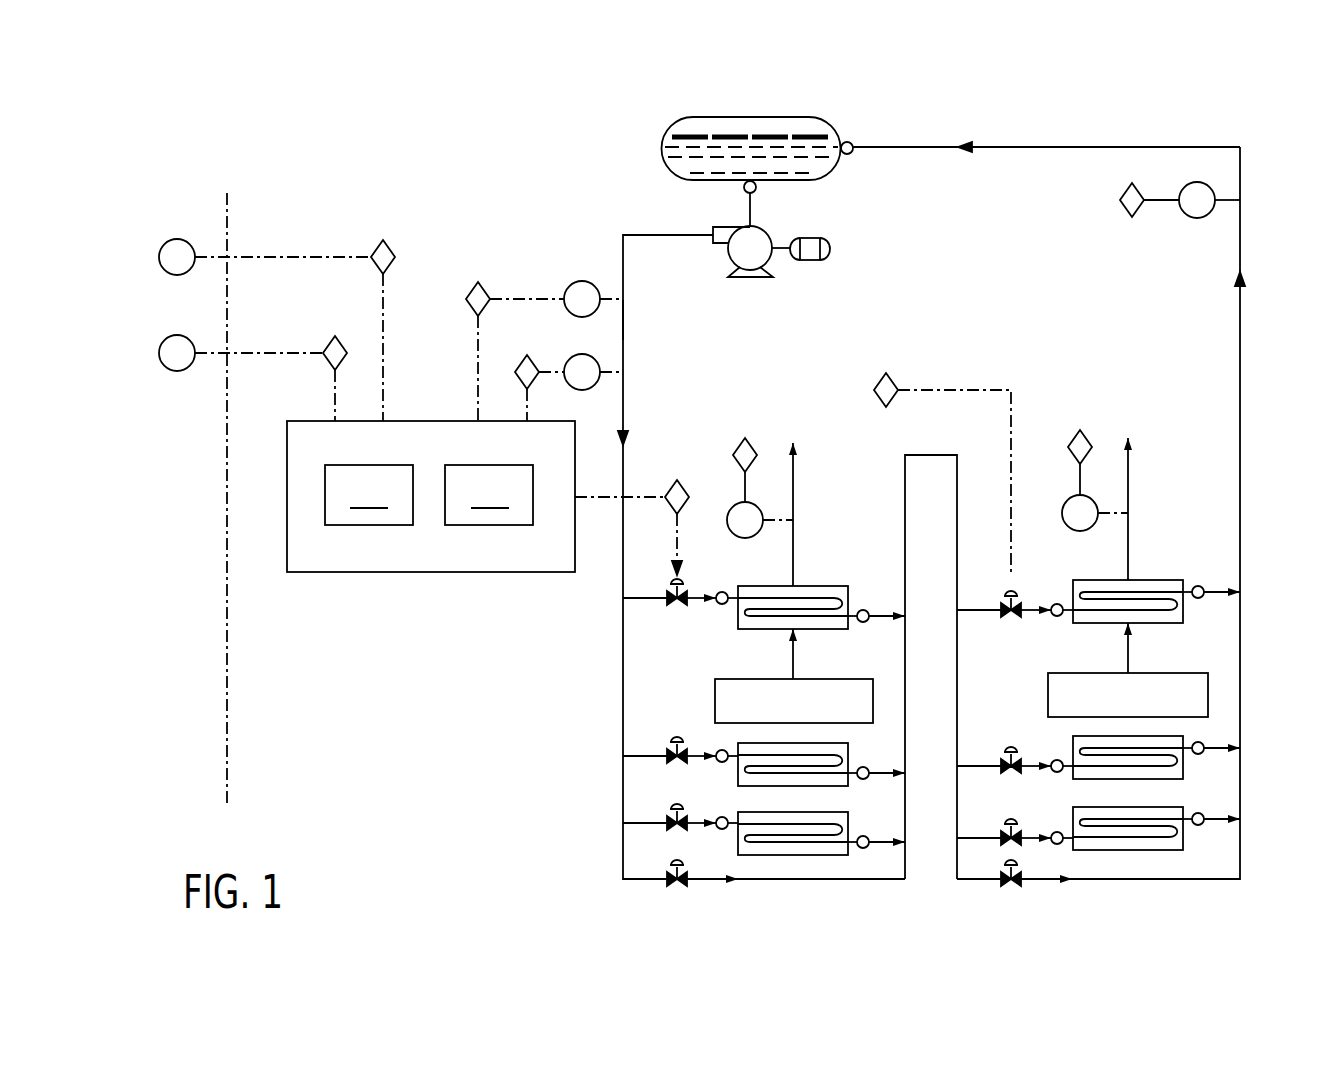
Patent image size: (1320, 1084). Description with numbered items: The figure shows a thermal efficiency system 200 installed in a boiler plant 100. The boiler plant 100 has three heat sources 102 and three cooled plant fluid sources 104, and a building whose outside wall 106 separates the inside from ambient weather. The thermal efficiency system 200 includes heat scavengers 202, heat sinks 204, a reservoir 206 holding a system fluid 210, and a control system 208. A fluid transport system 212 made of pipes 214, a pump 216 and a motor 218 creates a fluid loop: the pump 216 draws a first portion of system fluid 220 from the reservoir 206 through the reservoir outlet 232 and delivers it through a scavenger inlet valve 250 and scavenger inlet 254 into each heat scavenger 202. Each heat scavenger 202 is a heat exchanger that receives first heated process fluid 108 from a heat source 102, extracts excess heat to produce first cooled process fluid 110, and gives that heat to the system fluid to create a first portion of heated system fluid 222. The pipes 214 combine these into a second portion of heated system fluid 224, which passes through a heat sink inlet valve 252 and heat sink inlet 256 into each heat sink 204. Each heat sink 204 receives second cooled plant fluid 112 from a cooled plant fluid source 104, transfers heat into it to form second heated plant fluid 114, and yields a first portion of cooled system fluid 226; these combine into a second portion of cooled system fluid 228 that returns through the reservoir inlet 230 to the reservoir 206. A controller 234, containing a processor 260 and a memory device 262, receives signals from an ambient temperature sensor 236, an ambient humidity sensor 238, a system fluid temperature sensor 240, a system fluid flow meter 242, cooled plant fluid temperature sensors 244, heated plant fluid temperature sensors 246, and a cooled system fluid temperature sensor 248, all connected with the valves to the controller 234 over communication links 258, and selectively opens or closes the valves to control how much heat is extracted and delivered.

The boiler plant 100 is at (203, 717).
The heat source 102 is at (715, 700).
The cooled plant fluid source 104 is at (1048, 695).
The outside wall 106 is at (225, 657).
The first heated process fluid 108 is at (795, 660).
The first cooled process fluid 110 is at (795, 488).
The second cooled plant fluid 112 is at (1127, 655).
The second heated plant fluid 114 is at (1130, 483).
The thermal efficiency system 200 is at (307, 172).
The heat scavenger 202 is at (738, 625).
The heat sink 204 is at (1155, 580).
The reservoir 206 is at (750, 117).
The control system 208 is at (429, 553).
The system fluid 210 is at (690, 167).
The fluid transport system 212 is at (623, 322).
The pipes 214 is at (668, 235).
The pump 216 is at (750, 277).
The motor 218 is at (828, 250).
The first portion of system fluid 220 is at (645, 598).
The first portion of heated system fluid 222 is at (863, 610).
The second portion of heated system fluid 224 is at (905, 490).
The first portion of cooled system fluid 226 is at (1215, 598).
The second portion of cooled system fluid 228 is at (1105, 147).
The reservoir inlet 230 is at (853, 146).
The reservoir outlet 232 is at (757, 191).
The controller 234 is at (357, 572).
The ambient temperature sensor 236 is at (159, 353).
The ambient humidity sensor 238 is at (159, 257).
The system fluid temperature sensor 240 is at (570, 284).
The system fluid flow meter 242 is at (595, 358).
The cooled plant fluid temperature sensor 244 is at (728, 515).
The heated plant fluid temperature sensor 246 is at (1063, 512).
The cooled system fluid temperature sensor 248 is at (1195, 218).
The scavenger inlet valve 250 is at (675, 612).
The heat sink inlet valve 252 is at (1010, 622).
The scavenger inlet 254 is at (722, 592).
The heat sink inlet 256 is at (1057, 603).
The communication link 258 is at (383, 240).
The processor 260 is at (369, 495).
The memory device 262 is at (489, 495).